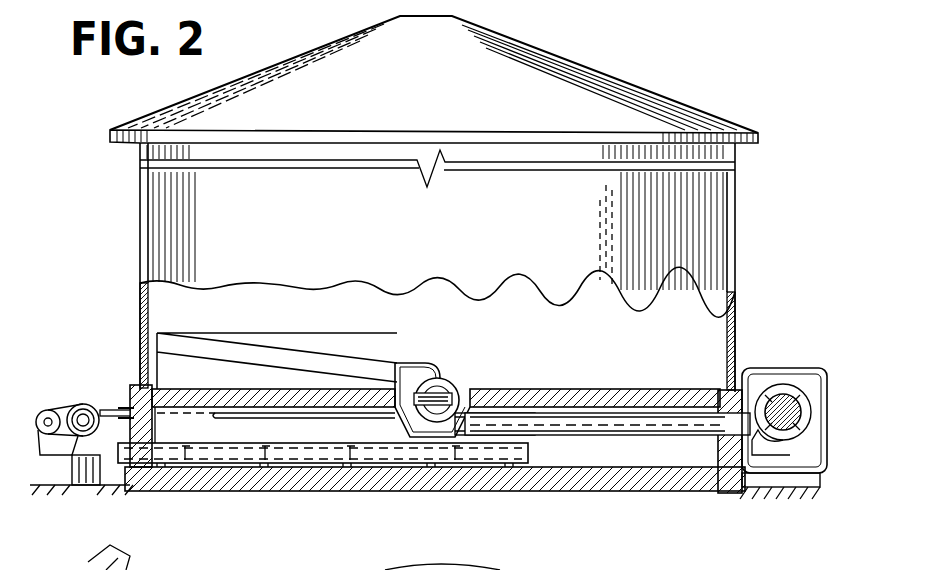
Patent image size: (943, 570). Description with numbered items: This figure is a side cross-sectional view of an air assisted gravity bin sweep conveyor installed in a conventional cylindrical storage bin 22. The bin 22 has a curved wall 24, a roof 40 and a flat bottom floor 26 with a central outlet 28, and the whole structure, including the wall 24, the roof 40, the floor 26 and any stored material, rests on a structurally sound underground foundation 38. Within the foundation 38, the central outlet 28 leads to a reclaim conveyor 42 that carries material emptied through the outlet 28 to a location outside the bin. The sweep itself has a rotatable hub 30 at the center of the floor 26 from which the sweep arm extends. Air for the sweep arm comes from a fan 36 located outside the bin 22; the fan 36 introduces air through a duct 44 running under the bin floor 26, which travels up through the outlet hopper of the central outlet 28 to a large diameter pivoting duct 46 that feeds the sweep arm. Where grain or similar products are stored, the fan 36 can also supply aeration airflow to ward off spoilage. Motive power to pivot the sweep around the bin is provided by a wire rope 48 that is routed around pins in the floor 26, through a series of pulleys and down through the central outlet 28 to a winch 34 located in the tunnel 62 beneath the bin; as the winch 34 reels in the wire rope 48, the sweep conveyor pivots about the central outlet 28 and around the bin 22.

The cylindrical storage bin 22 is at (745, 217).
The curved wall 24 is at (735, 322).
The flat bottom floor 26 is at (677, 392).
The central outlet 28 is at (467, 397).
The rotatable hub 30 is at (437, 377).
The winch 34 is at (70, 408).
The fan 36 is at (790, 385).
The underground foundation 38 is at (730, 494).
The roof 40 is at (600, 73).
The reclaim conveyor 42 is at (322, 452).
The duct 44 is at (648, 427).
The pivoting duct 46 is at (403, 367).
The wire rope 48 is at (123, 412).
The tunnel 62 is at (237, 427).